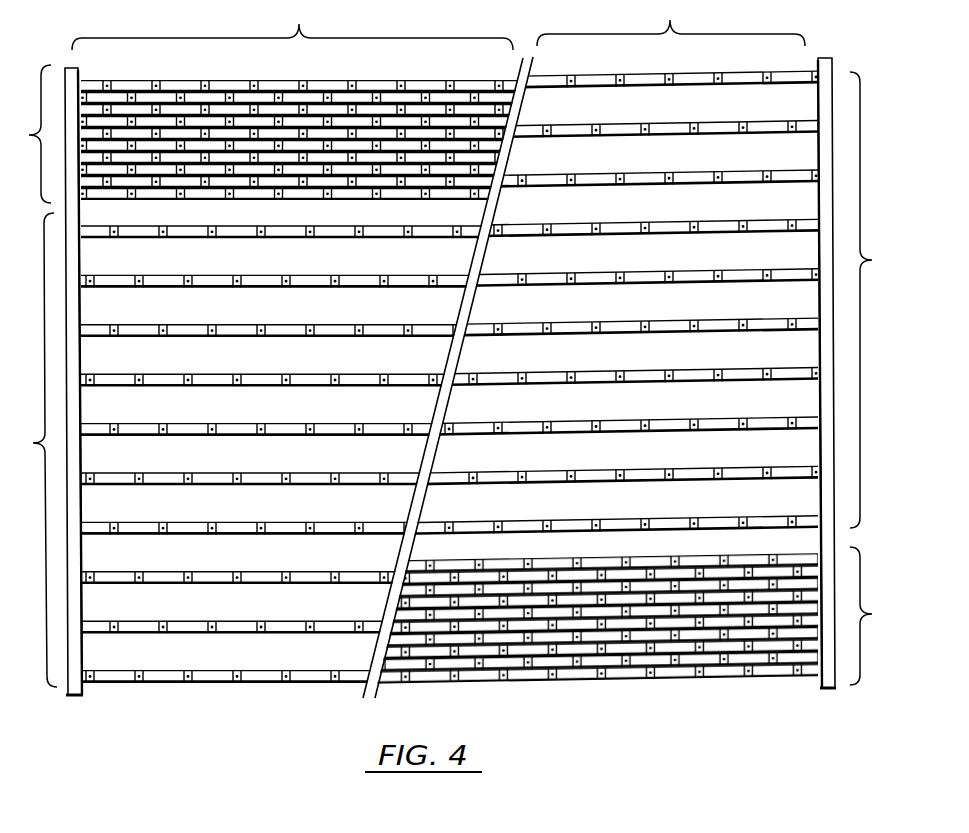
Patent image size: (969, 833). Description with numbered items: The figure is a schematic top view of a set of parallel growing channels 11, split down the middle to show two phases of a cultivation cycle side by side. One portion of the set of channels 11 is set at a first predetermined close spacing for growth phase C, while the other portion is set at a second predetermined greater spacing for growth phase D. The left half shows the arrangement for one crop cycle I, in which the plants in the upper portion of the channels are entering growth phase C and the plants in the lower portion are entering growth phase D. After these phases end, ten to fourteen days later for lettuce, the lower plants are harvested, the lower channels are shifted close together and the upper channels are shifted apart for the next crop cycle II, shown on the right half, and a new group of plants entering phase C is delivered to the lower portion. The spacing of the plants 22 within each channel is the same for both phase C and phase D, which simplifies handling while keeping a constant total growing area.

The elongated slat member 11 is at (245, 102).
The plants 22 is at (400, 83).
The growth phase C is at (451, 375).
The growth phase D is at (450, 379).
The crop cycle I is at (292, 25).
The crop cycle II is at (671, 23).